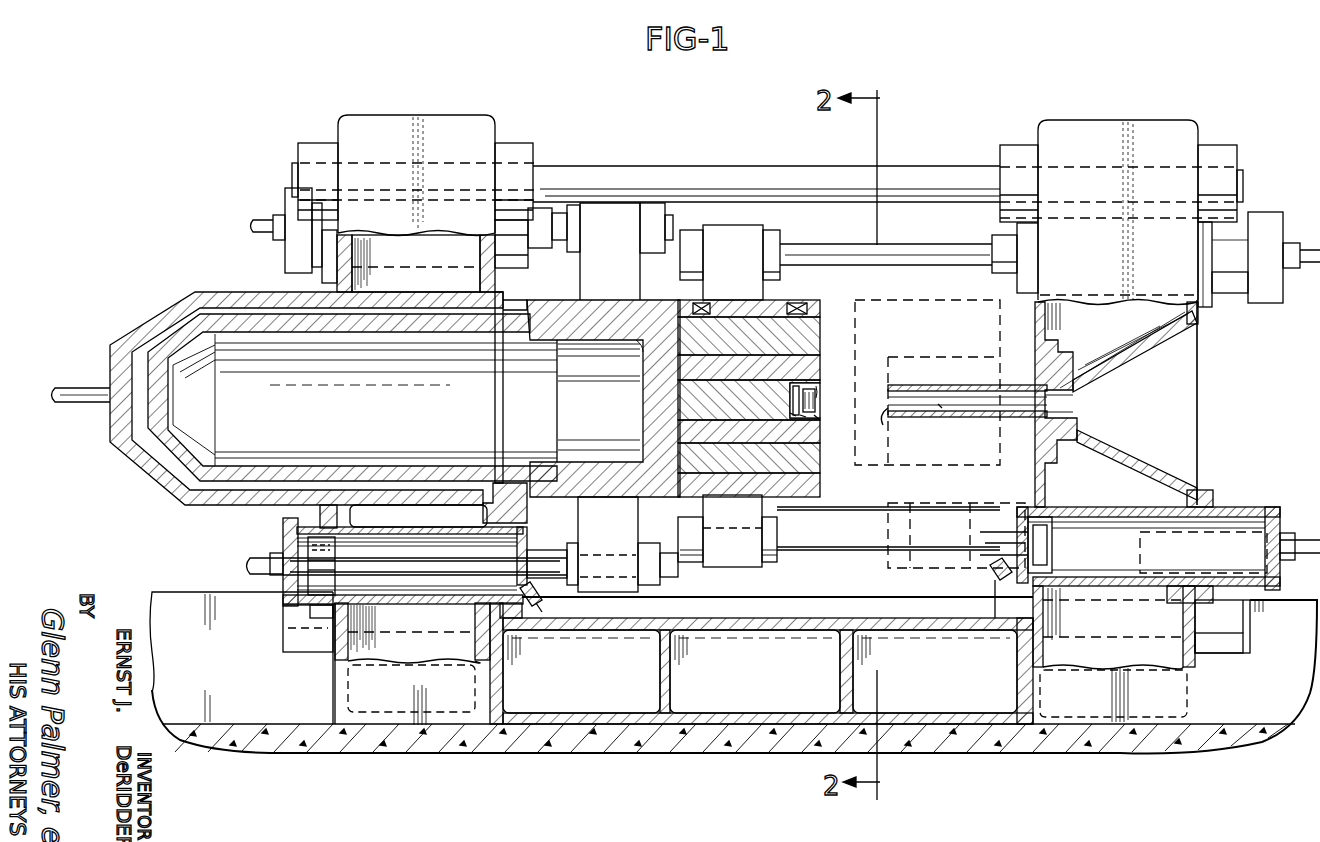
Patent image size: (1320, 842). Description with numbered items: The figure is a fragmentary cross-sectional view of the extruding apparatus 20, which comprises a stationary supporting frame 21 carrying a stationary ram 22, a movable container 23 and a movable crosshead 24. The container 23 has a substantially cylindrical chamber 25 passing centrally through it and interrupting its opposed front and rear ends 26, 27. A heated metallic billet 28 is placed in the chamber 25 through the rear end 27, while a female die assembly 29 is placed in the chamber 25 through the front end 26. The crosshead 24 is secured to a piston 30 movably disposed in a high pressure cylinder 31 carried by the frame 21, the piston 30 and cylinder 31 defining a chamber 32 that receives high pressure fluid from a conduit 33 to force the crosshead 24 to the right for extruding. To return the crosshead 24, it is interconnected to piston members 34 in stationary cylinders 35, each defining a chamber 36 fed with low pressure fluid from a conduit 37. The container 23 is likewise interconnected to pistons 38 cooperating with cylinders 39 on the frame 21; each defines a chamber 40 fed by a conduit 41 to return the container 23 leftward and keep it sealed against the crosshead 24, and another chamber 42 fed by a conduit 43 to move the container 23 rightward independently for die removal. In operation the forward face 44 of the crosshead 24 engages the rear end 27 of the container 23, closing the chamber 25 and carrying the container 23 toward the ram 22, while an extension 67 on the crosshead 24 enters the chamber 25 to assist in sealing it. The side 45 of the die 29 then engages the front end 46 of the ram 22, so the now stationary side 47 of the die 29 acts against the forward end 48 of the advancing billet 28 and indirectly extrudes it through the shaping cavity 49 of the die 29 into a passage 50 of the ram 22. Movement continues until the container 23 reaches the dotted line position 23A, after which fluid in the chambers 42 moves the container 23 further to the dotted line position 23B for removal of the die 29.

The extruding apparatus 20 is at (703, 122).
The stationary supporting frame 21 is at (328, 692).
The stationary ram 22 is at (937, 383).
The movable container 23 is at (817, 300).
The dotted line position of container 23A is at (865, 300).
The dotted line position of container 23B is at (1047, 333).
The movable crosshead 24 is at (625, 315).
The cylindrical chamber 25 is at (723, 410).
The front end of container 26 is at (818, 383).
The rear end of container 27 is at (667, 430).
The heated metallic billet 28 is at (693, 395).
The female die assembly 29 is at (818, 385).
The piston 30 is at (513, 317).
The high pressure cylinder 31 is at (248, 300).
The chamber 32 is at (155, 455).
The conduit 33 is at (73, 392).
The piston member 34 is at (437, 585).
The stationary cylinder 35 is at (362, 520).
The chamber 36 is at (400, 545).
The conduit 37 is at (528, 612).
The piston 38 is at (1050, 547).
The cylinder 39 is at (1090, 507).
The chamber 40 is at (1128, 540).
The conduit 41 is at (1310, 540).
The chamber 42 is at (1017, 507).
The conduit 43 is at (990, 572).
The forward face of crosshead 44 is at (690, 318).
The side of die 45 is at (817, 417).
The front end of stationary ram 46 is at (888, 412).
The side of die 47 is at (803, 418).
The bushing 48 is at (792, 415).
The shaping cavity 49 is at (815, 398).
The passage of ram 50 is at (940, 405).
The extension 67 is at (692, 405).